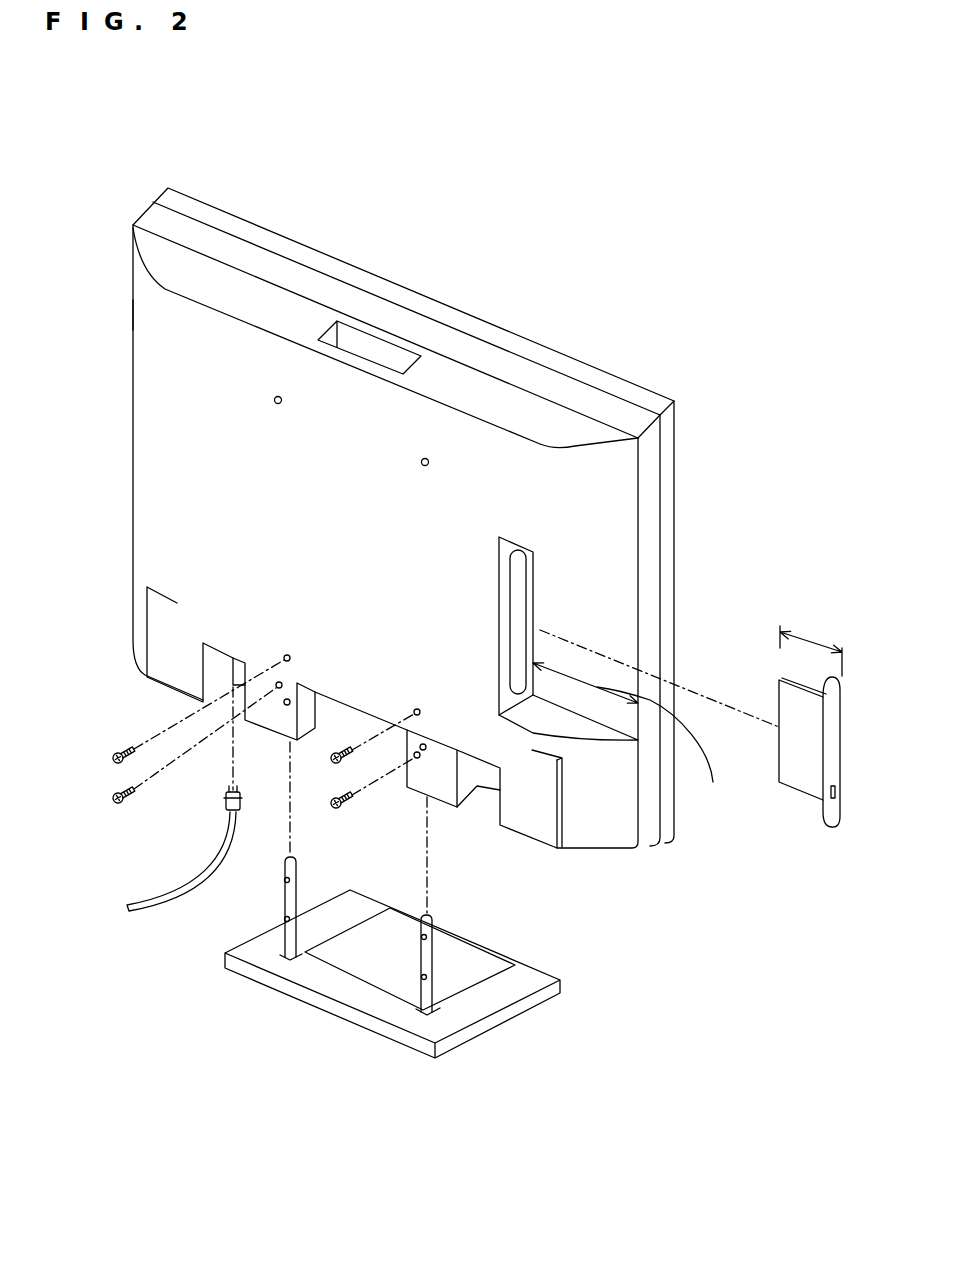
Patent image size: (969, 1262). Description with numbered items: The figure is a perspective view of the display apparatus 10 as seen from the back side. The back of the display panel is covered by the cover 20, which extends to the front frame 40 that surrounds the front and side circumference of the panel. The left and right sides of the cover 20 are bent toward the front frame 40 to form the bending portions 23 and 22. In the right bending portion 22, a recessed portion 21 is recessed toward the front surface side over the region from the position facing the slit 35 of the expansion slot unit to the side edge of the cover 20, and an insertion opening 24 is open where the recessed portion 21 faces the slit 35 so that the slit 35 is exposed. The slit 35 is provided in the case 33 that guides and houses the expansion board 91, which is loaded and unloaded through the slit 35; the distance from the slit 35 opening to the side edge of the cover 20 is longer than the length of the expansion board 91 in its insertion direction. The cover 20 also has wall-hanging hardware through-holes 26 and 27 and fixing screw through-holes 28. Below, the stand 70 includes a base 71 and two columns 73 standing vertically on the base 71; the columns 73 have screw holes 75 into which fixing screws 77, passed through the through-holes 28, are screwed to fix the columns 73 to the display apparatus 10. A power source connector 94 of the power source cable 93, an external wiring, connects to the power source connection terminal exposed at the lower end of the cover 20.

The display apparatus 10 is at (482, 208).
The cover 20 is at (155, 216).
The recessed portion 21 is at (583, 630).
The bending portion 22 is at (578, 493).
The bending portion 23 is at (132, 312).
The insertion opening 24 is at (532, 752).
The wall-hanging hardware through-holes 26 is at (274, 402).
The wall-hanging hardware through-holes 27 is at (282, 685).
The fixing screw through-holes 28 is at (290, 702).
The case 33 is at (535, 606).
The slit 35 is at (600, 562).
The front frame 40 is at (186, 195).
The stand 70 is at (528, 1039).
The base 71 is at (397, 1033).
The columns 73 is at (285, 900).
The screw holes 75 is at (285, 880).
The fixing screws 77 is at (122, 752).
The expansion board 91 is at (797, 777).
The power source cable 93 is at (212, 858).
The power source connector 94 is at (230, 808).